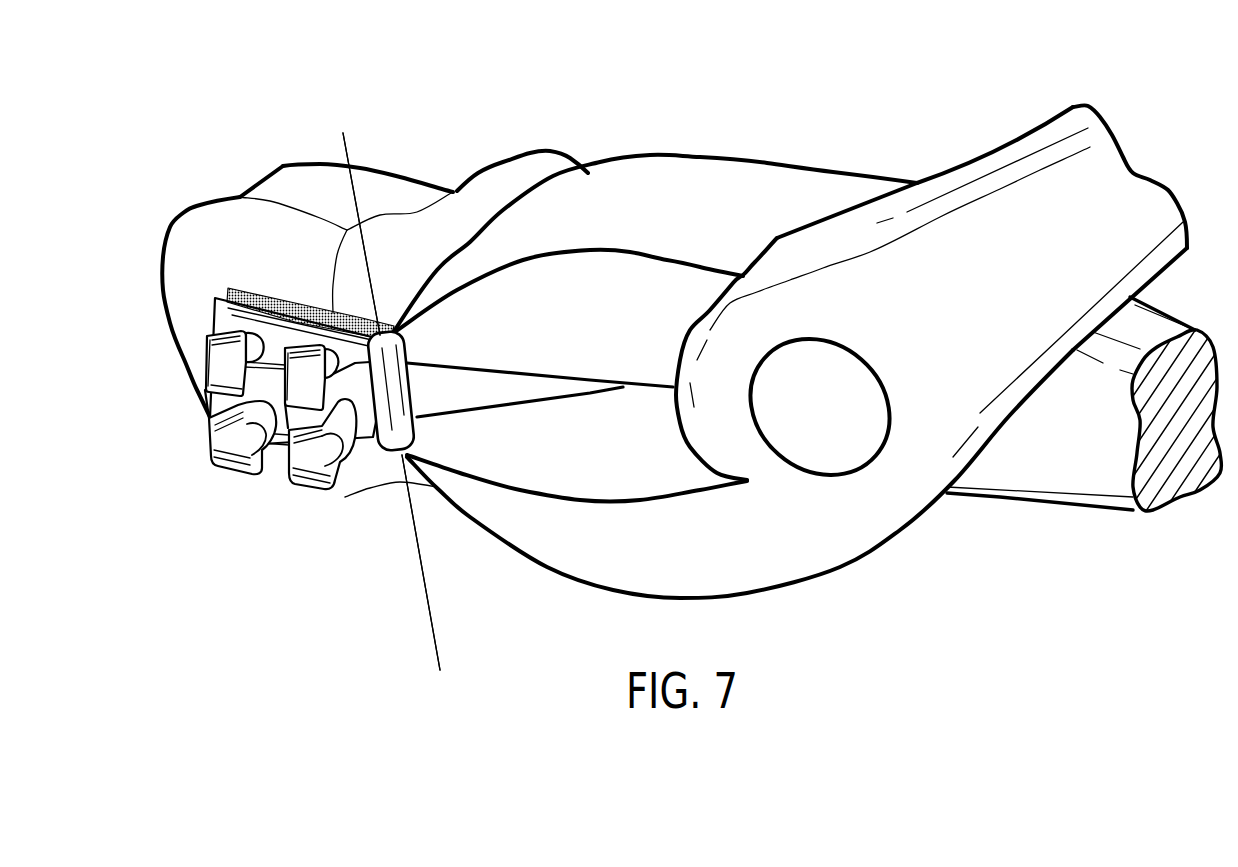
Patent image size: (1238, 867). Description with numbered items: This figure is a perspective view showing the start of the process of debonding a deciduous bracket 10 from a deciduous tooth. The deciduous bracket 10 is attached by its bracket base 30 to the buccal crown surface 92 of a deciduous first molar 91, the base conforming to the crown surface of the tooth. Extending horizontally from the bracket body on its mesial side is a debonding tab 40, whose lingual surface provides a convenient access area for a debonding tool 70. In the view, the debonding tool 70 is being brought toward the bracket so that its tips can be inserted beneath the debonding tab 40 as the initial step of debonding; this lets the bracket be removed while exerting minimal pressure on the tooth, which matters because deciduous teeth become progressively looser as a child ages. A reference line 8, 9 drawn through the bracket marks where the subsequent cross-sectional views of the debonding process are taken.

The deciduous bracket 10 is at (264, 399).
The bracket base 30 is at (224, 293).
The debonding tab 40 is at (390, 432).
The debonding tool 70 is at (857, 546).
The deciduous first molar 91 is at (284, 165).
The buccal crown surface 92 is at (206, 251).
The reference line 8,9 8 is at (343, 133).
The reference line 8 9 is at (440, 670).